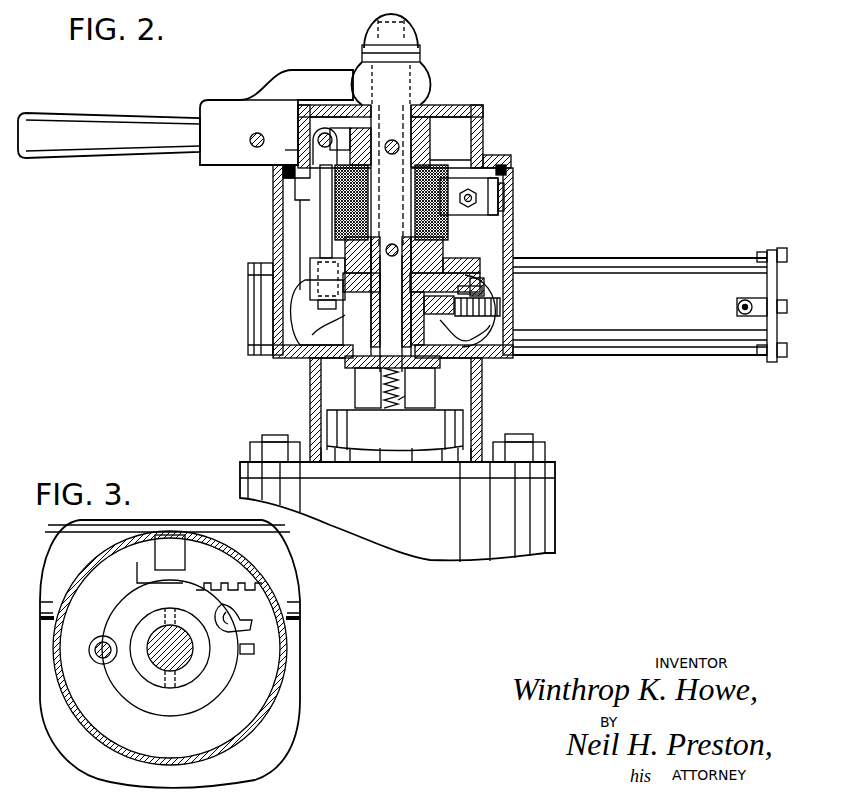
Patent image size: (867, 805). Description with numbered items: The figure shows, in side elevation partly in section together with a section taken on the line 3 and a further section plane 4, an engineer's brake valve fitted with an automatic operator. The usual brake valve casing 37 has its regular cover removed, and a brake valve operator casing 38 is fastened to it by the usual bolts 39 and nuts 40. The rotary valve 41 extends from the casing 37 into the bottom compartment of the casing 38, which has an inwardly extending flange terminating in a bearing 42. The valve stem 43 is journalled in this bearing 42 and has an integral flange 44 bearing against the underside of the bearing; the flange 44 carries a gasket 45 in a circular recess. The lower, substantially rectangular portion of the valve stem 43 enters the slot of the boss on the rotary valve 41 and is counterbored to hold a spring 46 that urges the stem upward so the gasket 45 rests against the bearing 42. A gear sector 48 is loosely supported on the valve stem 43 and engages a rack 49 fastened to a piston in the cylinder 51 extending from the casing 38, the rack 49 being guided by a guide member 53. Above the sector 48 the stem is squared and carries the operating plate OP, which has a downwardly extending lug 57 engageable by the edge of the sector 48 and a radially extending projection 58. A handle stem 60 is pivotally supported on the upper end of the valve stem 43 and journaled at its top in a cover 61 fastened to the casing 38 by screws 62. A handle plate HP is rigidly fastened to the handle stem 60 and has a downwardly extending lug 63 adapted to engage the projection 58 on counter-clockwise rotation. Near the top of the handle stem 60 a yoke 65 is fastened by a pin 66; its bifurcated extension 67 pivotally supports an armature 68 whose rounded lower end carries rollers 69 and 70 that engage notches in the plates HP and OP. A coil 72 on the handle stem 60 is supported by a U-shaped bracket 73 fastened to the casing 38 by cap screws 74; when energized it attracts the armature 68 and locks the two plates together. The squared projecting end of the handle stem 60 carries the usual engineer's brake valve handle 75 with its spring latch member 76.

In FIG. 2, the section line 3— 3 is at (452, 239).
In FIG. 2, the section line 4— 4 is at (308, 100).
In FIG. 2, the brake valve casing 37 is at (556, 500).
In FIG. 2, the brake valve operator casing 38 is at (482, 400).
In FIG. 3, the brake valve operator casing 38 is at (282, 688).
In FIG. 2, the bolts 39 is at (264, 437).
In FIG. 2, the nuts 40 is at (256, 451).
In FIG. 2, the rotary valve 41 is at (345, 421).
In FIG. 2, the bearing 42 is at (424, 336).
In FIG. 2, the valve stem 43 is at (350, 364).
In FIG. 2, the integral flange 44 is at (357, 370).
In FIG. 2, the gasket 45 is at (432, 364).
In FIG. 2, the spring 46 is at (400, 400).
In FIG. 2, the gear sector 48 is at (467, 311).
In FIG. 2, the rack 49 is at (503, 321).
In FIG. 3, the rack 49 is at (240, 572).
In FIG. 2, the cylinder 51 is at (650, 264).
In FIG. 3, the cylinder 51 is at (288, 590).
In FIG. 3, the guide member 53 is at (160, 556).
In FIG. 2, the lug 57 is at (345, 308).
In FIG. 2, the radially extending projection 58 is at (503, 299).
In FIG. 3, the radially extending projection 58 is at (248, 627).
In FIG. 2, the handle stem 60 is at (428, 108).
In FIG. 3, the handle stem 60 is at (158, 660).
In FIG. 2, the cover 61 is at (486, 118).
In FIG. 2, the screws 62 is at (508, 170).
In FIG. 2, the lug 63 is at (503, 278).
In FIG. 3, the lug 63 is at (254, 650).
In FIG. 2, the yoke 65 is at (430, 140).
In FIG. 2, the pin 66 is at (400, 150).
In FIG. 2, the bifurcated extension 67 is at (338, 127).
In FIG. 2, the armature 68 is at (322, 214).
In FIG. 3, the armature 68 is at (106, 658).
In FIG. 2, the roller 69 is at (310, 270).
In FIG. 3, the roller 69 is at (95, 640).
In FIG. 2, the roller 70 is at (318, 292).
In FIG. 2, the coil 72 is at (452, 190).
In FIG. 2, the U-shaped bracket 73 is at (490, 188).
In FIG. 2, the cap screws 74 is at (503, 198).
In FIG. 2, the engineer's brake valve handle 75 is at (224, 101).
In FIG. 2, the spring latch member 76 is at (290, 154).
In FIG. 2, the handle plate HP is at (440, 260).
In FIG. 3, the handle plate HP is at (217, 688).
In FIG. 2, the operating plate OP is at (472, 282).
In FIG. 3, the operating plate OP is at (226, 612).